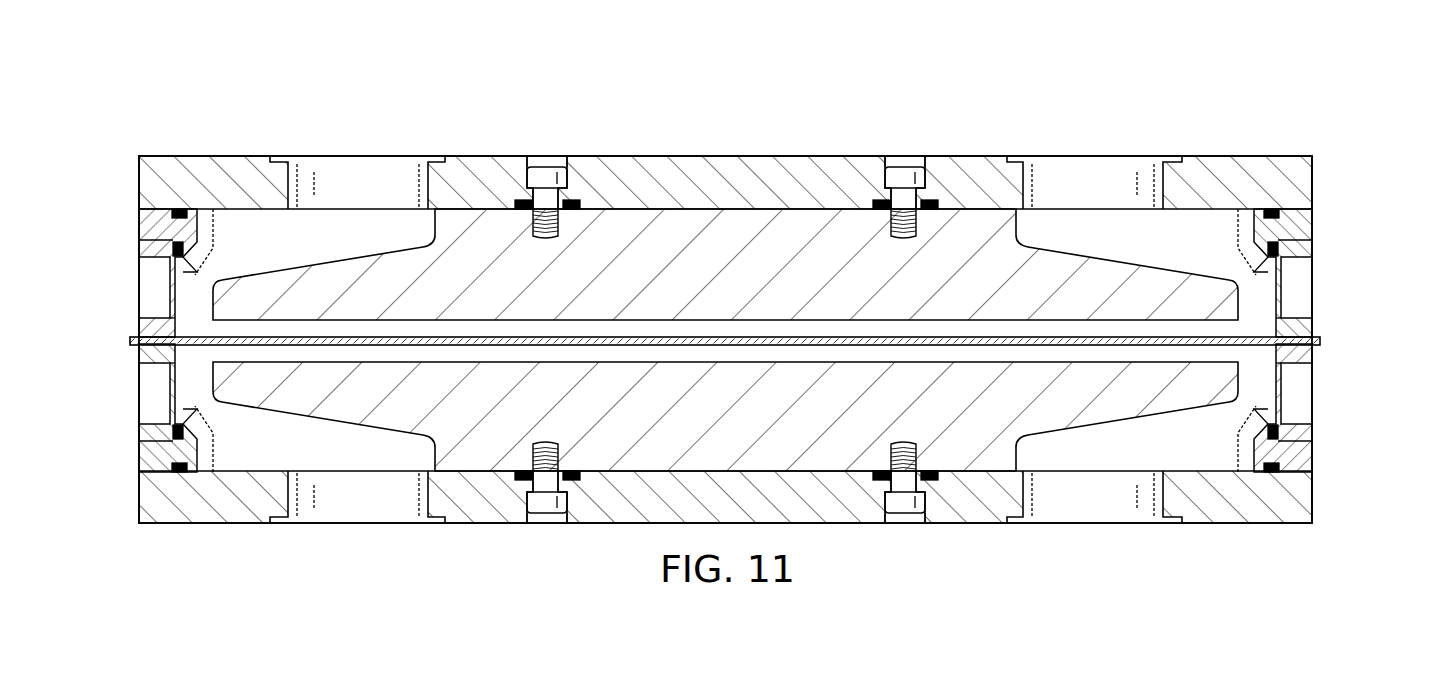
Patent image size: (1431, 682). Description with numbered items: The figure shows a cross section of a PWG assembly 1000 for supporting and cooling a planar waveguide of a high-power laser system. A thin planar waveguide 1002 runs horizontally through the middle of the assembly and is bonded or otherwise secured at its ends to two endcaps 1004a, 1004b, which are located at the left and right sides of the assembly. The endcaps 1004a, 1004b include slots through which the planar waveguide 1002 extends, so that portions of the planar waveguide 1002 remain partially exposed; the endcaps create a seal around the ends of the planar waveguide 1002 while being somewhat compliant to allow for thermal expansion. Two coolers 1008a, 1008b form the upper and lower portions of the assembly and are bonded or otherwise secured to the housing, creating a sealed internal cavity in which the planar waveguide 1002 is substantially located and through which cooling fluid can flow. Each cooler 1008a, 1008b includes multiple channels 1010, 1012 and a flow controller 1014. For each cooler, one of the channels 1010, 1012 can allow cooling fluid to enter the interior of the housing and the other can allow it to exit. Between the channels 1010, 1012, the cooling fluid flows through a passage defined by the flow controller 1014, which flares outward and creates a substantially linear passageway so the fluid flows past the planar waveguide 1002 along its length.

The PWG assembly 1000 is at (492, 81).
The planar waveguide 1002 is at (133, 340).
The endcap 1004a is at (148, 295).
The endcap 1004b is at (1303, 295).
The cooler 1008a is at (970, 167).
The cooler 1008b is at (945, 516).
The channel 1010 is at (355, 507).
The channel 1012 is at (1093, 507).
The flow controller 1014 is at (288, 402).